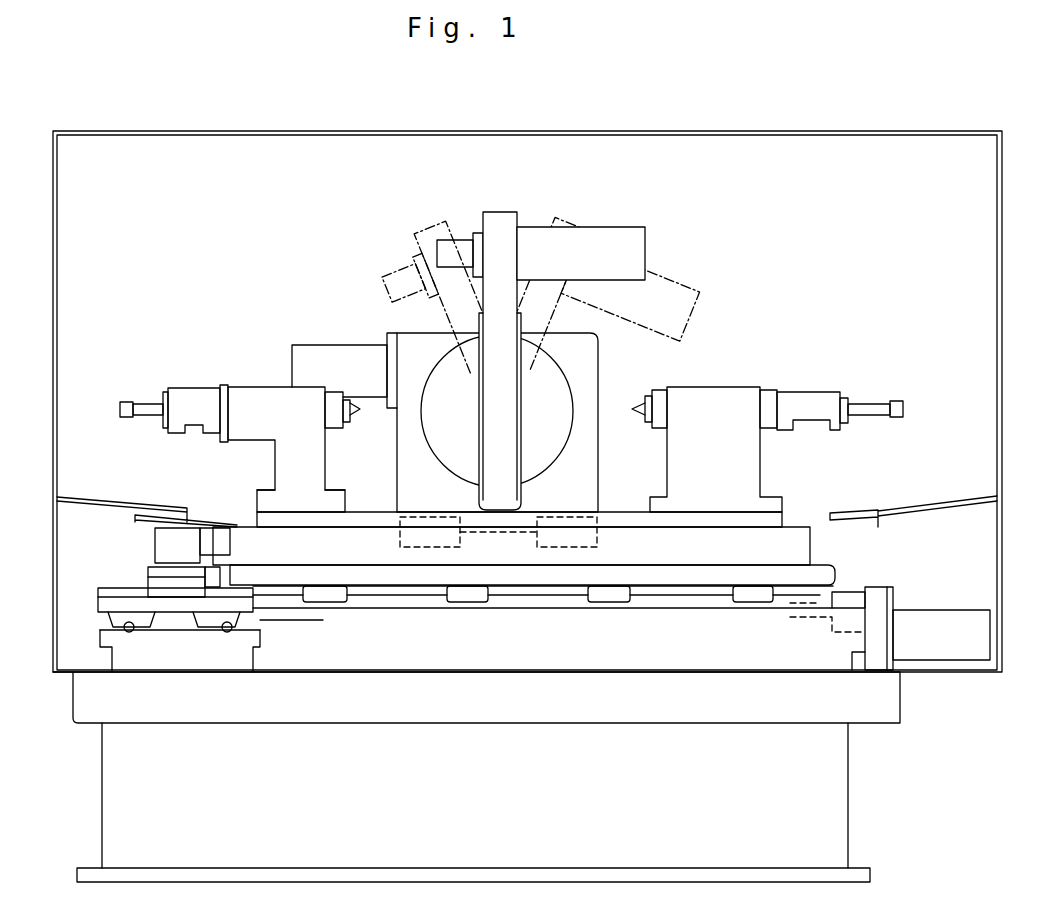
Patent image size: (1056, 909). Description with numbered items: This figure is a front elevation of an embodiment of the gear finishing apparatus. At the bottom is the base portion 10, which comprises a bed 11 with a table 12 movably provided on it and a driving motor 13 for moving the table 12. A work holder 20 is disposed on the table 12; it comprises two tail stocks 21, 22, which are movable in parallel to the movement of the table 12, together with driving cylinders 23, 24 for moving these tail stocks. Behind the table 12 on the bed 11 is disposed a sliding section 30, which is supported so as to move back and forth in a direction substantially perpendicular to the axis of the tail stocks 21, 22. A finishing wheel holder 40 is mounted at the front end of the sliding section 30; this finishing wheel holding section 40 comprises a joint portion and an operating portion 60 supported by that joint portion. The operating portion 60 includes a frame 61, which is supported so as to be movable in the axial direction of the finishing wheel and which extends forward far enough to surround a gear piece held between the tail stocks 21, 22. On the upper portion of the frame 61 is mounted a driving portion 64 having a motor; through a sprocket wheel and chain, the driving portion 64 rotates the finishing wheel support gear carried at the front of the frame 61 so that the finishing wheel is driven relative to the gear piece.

The base portion 10 is at (937, 708).
The bed 11 is at (694, 801).
The table 12 is at (798, 550).
The driving motor 13 is at (972, 628).
The work holder 20 is at (813, 343).
The tail stock 21 is at (282, 387).
The tail stock 22 is at (742, 400).
The driving cylinder 23 is at (197, 388).
The driving cylinder 24 is at (817, 393).
The sliding section 30 is at (600, 372).
The finishing wheel holder 40 is at (599, 355).
The operating portion 60 is at (638, 200).
The frame 61 is at (513, 212).
The driving portion 64 is at (645, 228).